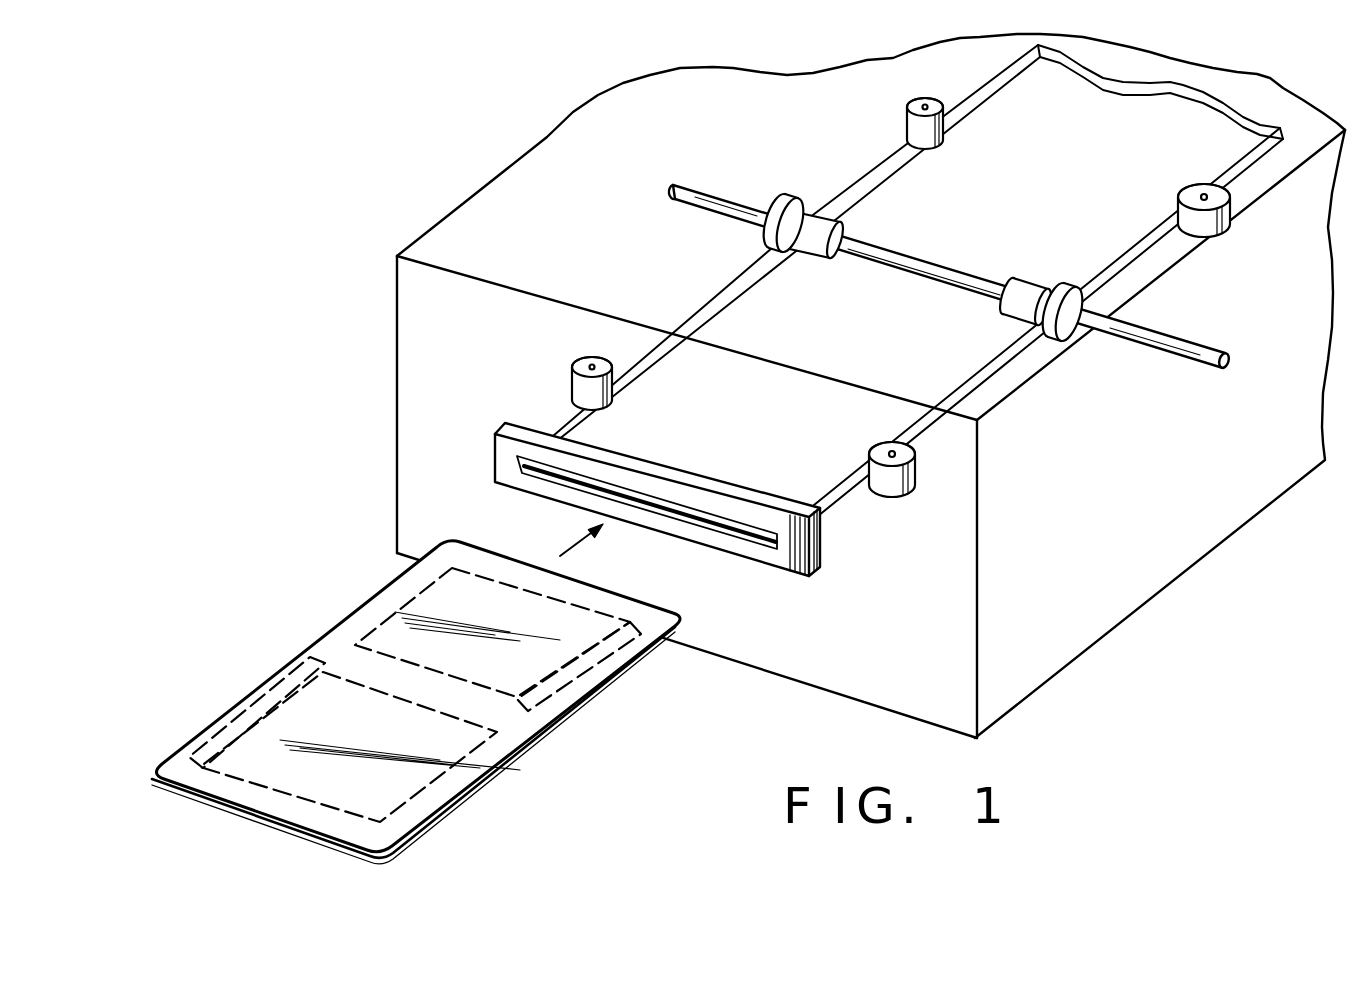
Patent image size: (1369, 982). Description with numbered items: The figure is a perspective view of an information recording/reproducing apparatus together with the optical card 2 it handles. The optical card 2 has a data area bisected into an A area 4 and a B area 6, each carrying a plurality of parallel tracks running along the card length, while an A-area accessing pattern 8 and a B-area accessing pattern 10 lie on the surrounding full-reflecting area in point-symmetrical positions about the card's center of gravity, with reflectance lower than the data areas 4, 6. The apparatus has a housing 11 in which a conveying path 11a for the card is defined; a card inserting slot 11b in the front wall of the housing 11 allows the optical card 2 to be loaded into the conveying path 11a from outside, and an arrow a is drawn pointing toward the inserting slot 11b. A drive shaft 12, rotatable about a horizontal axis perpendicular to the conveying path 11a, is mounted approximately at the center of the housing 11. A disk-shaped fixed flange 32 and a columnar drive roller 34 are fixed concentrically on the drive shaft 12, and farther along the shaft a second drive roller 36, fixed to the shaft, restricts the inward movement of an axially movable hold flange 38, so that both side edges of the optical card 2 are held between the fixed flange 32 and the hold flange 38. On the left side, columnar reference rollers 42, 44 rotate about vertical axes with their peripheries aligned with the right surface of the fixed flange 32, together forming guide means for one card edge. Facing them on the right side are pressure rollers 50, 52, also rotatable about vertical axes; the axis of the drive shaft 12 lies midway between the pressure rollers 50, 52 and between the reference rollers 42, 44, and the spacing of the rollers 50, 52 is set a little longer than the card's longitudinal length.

The optical card 2 is at (538, 751).
The A area 4 is at (476, 683).
The B area 6 is at (265, 792).
The A-area accessing pattern 8 is at (592, 691).
The B-area accessing pattern 10 is at (250, 700).
The housing 11 is at (397, 378).
The conveying path 11a is at (692, 318).
The card inserting slot 11b is at (540, 471).
The drive shaft 12 is at (1151, 342).
The fixed flange 32 is at (794, 210).
The drive roller 34 is at (818, 216).
The drive roller 36 is at (1027, 282).
The hold flange 38 is at (1063, 284).
The reference roller 42 is at (940, 112).
The reference roller 44 is at (572, 376).
The pressure roller 50 is at (1180, 197).
The pressure roller 52 is at (893, 492).
The insertion direction a is at (583, 542).